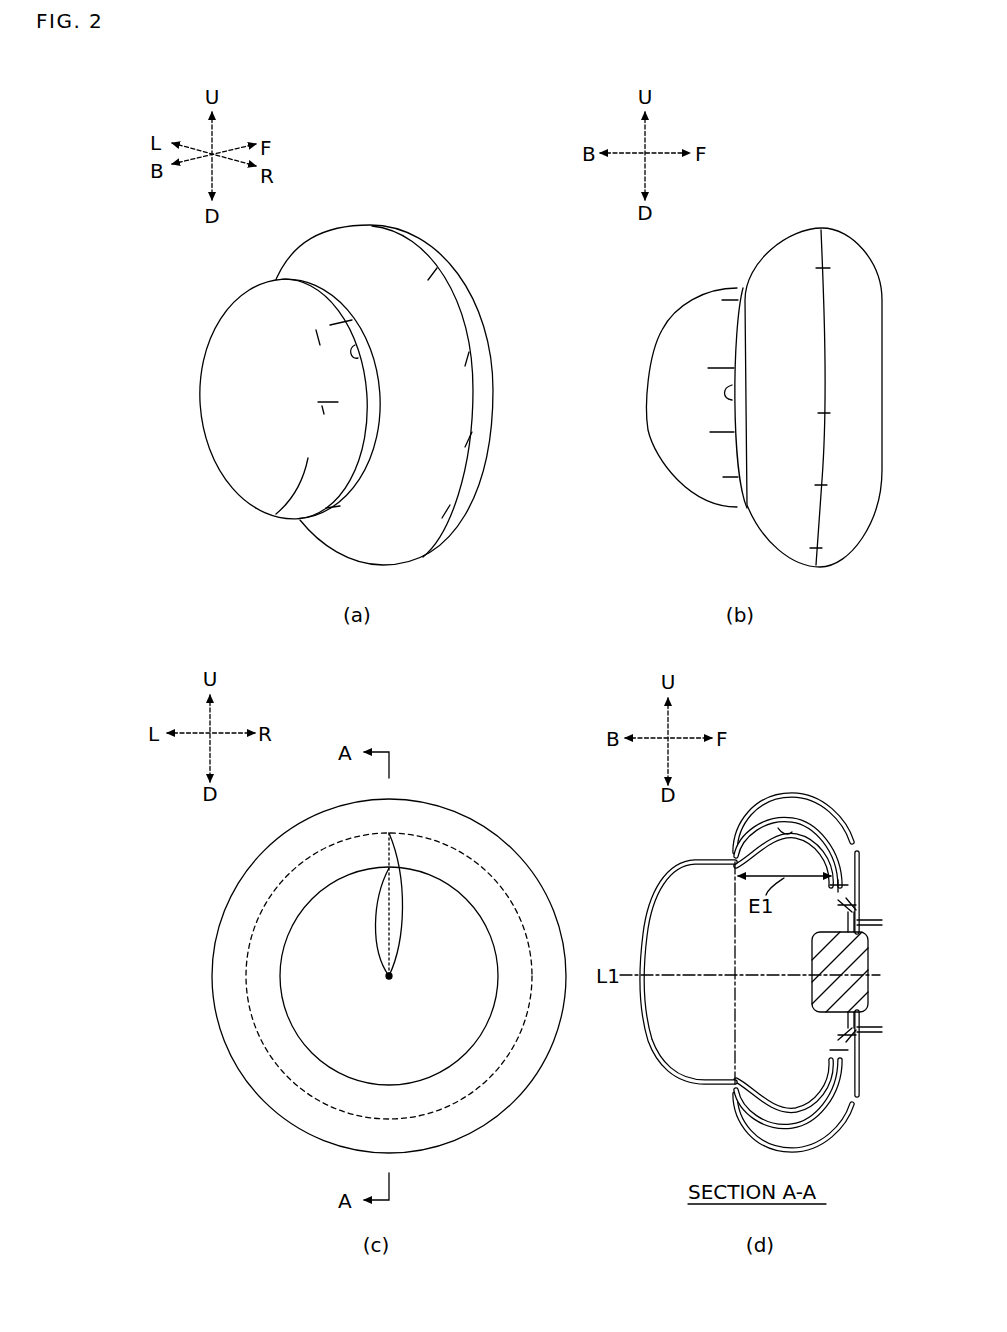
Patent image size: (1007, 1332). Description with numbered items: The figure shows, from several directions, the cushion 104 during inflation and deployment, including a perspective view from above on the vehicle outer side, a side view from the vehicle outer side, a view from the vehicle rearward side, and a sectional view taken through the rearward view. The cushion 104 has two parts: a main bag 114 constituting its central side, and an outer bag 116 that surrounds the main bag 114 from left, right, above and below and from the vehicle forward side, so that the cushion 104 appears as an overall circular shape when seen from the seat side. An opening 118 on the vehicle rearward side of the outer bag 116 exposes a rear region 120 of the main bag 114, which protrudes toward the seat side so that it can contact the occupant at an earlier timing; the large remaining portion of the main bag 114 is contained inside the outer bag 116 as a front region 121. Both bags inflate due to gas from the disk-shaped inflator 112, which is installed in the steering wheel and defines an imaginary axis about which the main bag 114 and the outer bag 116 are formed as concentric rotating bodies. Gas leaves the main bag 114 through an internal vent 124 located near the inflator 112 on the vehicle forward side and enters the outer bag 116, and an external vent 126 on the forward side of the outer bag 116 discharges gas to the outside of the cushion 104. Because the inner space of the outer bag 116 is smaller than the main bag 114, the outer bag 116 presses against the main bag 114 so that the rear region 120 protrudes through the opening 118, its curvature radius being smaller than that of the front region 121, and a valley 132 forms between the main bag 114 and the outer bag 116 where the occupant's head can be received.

The cushion 104 is at (444, 216).
The inflator 112 is at (870, 955).
The main bag 114 is at (228, 326).
The outer bag 116 is at (338, 242).
The opening 118 is at (362, 351).
The rear region 120 is at (224, 420).
The front region 121 is at (462, 853).
The internal vent 124 is at (840, 890).
The external vent 126 is at (860, 856).
The valley 132 is at (774, 828).